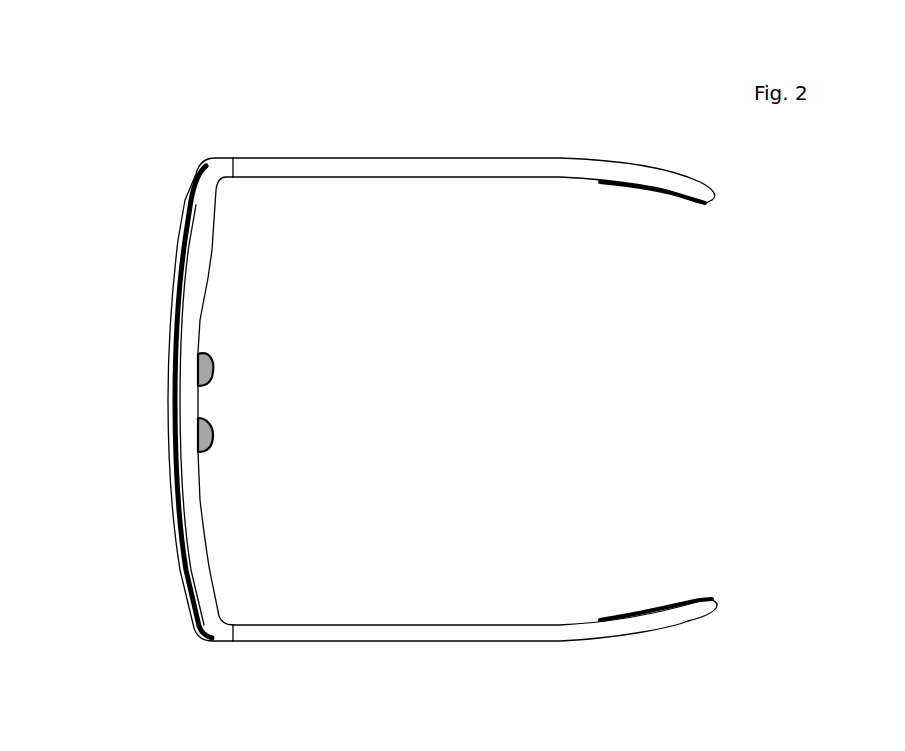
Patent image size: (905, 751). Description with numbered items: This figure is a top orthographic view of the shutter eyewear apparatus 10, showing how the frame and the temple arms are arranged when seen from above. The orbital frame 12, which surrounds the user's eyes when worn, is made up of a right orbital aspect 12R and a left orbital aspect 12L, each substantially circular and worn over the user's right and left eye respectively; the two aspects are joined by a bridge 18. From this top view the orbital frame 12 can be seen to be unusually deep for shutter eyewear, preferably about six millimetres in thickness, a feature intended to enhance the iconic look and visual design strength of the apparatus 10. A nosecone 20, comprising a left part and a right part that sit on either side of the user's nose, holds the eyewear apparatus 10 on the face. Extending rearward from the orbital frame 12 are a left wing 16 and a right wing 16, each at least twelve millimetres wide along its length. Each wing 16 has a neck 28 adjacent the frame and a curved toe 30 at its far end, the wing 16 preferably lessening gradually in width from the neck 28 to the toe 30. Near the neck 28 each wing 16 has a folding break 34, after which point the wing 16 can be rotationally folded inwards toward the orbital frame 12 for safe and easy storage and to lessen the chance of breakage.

The shutter eyewear apparatus 10 is at (124, 108).
The orbital frame 12 is at (207, 278).
The right orbital aspect 12R is at (127, 263).
The left orbital aspect 12L is at (133, 525).
The wing 16 is at (499, 128).
The bridge 18 is at (141, 402).
The nosecone 20 is at (230, 380).
The neck 28 is at (258, 120).
The curved toe 30 is at (649, 210).
The folding break 34 is at (230, 148).